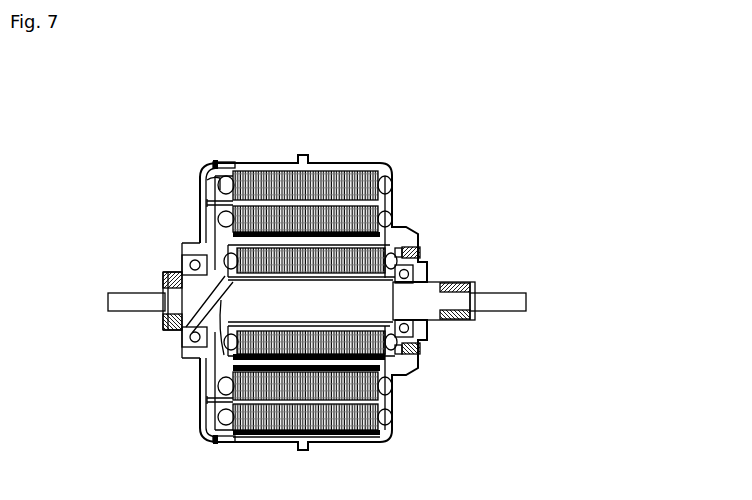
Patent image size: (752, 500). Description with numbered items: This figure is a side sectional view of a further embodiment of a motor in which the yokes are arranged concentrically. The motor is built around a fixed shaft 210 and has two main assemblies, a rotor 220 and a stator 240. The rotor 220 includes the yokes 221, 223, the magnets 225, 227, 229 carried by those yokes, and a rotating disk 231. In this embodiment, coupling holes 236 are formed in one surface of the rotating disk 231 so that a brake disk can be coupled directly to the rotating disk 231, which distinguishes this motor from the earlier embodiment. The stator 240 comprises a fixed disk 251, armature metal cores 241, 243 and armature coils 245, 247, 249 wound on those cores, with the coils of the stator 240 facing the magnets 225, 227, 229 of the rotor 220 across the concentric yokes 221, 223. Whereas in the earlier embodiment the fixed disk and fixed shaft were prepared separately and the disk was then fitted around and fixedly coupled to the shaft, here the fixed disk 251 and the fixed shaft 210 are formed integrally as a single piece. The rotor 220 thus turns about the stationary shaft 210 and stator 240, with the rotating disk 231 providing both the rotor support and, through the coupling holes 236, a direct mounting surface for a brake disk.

The fixed shaft 210 is at (462, 300).
The rotor 220 is at (391, 436).
The yoke 221 is at (290, 444).
The yoke 223 is at (403, 371).
The magnet 225 is at (254, 434).
The magnet 227 is at (236, 360).
The magnet 229 is at (240, 365).
The rotating disk 231 is at (394, 400).
The coupling holes 236 is at (425, 250).
The stator 240 is at (216, 427).
The armature metal core 241 is at (357, 190).
The armature metal core 243 is at (165, 278).
The armature coil 245 is at (233, 161).
The armature coil 247 is at (228, 216).
The armature coil 249 is at (240, 262).
The fixed disk 251 is at (225, 186).